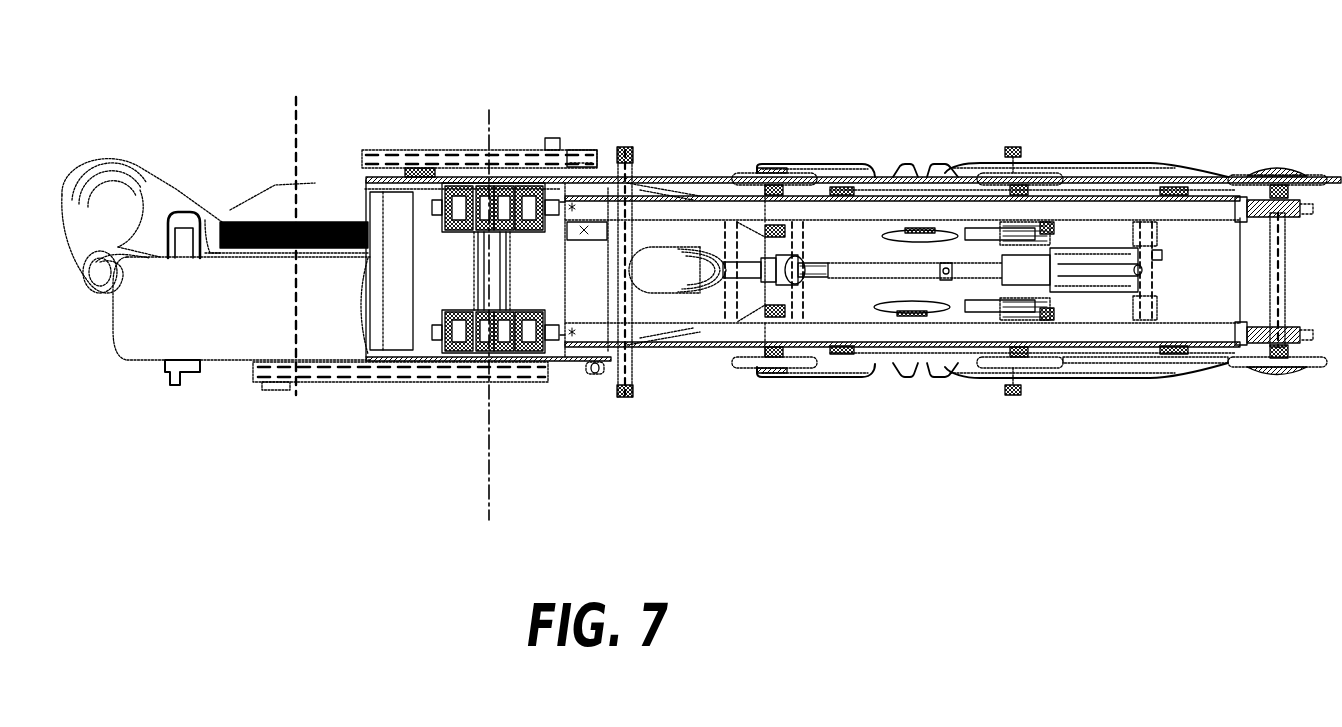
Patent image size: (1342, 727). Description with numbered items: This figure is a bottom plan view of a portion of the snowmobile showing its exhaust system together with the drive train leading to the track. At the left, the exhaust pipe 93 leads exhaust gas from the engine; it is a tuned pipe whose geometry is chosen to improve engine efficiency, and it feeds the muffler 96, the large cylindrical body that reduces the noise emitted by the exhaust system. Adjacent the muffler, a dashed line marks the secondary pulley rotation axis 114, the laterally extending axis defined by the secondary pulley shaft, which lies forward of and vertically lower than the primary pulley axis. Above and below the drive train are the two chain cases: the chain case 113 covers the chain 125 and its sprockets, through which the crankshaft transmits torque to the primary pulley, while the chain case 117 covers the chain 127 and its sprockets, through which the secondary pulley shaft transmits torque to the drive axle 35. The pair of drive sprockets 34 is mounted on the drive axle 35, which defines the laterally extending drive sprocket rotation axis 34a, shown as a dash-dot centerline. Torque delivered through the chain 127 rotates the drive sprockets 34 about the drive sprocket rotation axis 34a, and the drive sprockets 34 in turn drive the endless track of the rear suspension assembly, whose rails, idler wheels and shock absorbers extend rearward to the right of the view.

The exhaust pipe 93 is at (116, 170).
The muffler 96 is at (143, 348).
The secondary pulley rotation axis 114 is at (290, 108).
The chain 125 is at (414, 150).
The drive sprockets 34 is at (445, 215).
The chain case 113 is at (518, 150).
The drive axle 35 is at (503, 272).
The drive sprocket rotation axis 34a is at (517, 490).
The chain case 117 is at (370, 382).
The chain 127 is at (262, 396).